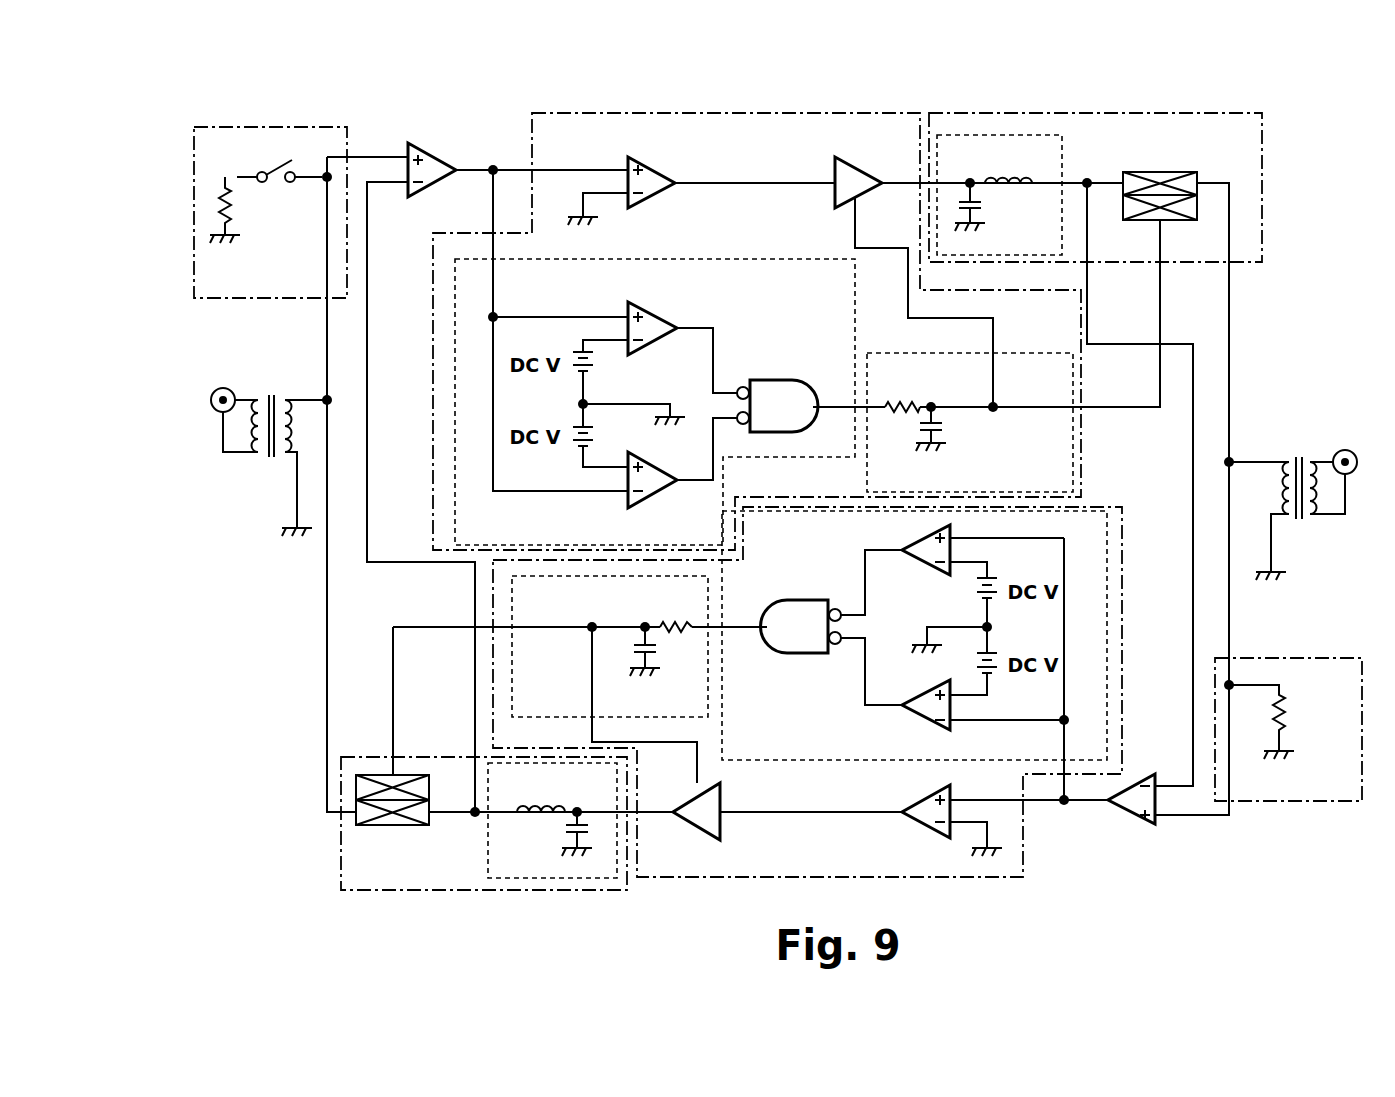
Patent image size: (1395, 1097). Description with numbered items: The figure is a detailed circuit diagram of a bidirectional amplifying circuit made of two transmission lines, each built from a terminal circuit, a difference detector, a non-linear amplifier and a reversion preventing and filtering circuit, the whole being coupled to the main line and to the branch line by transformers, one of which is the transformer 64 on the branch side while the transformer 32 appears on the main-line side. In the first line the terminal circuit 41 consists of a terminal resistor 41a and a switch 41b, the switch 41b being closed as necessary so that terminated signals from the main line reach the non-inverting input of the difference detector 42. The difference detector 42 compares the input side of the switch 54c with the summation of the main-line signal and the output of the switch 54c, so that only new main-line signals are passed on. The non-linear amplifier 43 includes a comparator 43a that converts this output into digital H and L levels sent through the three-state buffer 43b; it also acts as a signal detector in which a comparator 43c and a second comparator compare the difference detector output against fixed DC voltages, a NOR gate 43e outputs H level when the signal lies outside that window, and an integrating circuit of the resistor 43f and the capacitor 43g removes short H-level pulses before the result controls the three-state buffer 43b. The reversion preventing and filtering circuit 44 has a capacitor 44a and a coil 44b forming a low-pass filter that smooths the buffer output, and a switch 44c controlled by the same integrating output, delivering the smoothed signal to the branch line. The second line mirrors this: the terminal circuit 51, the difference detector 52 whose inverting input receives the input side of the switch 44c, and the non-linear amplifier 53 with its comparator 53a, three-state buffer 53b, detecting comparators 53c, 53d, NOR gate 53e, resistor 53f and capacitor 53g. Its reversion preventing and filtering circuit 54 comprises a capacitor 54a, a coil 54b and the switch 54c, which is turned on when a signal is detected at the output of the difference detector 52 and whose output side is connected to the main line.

The terminal circuit 41 is at (263, 127).
The terminal resistor 41a is at (276, 163).
The switch 41b is at (238, 215).
The difference detector 42 is at (440, 150).
The non-linear amplifier 43 is at (683, 113).
The comparator 43a is at (655, 160).
The 3-state buffer 43b is at (842, 208).
The comparator 43c is at (662, 312).
The NOR gate 43e is at (776, 379).
The resistor 43f is at (894, 402).
The capacitor 43g is at (943, 432).
The reversion preventing and filtering circuit 44 is at (1262, 224).
The capacitor 44a is at (986, 216).
The coil 44b is at (991, 176).
The switch 44c is at (1197, 174).
The transformer 32 is at (268, 458).
The transformer 64 is at (1295, 451).
The terminal circuit 51 is at (1268, 658).
The difference detector 52 is at (1135, 774).
The non-linear amplifier 53 is at (1023, 848).
The comparator 53a is at (905, 820).
The 3-state buffer 53b is at (720, 790).
The comparator 53c is at (908, 540).
The comparator 53d is at (913, 693).
The NOR gate 53e is at (797, 600).
The resistor 53f is at (670, 622).
The capacitor 53g is at (630, 648).
The reversion preventing and filtering circuit 54 is at (341, 865).
The capacitor 54a is at (563, 836).
The coil 54b is at (529, 800).
The switch 54c is at (472, 816).